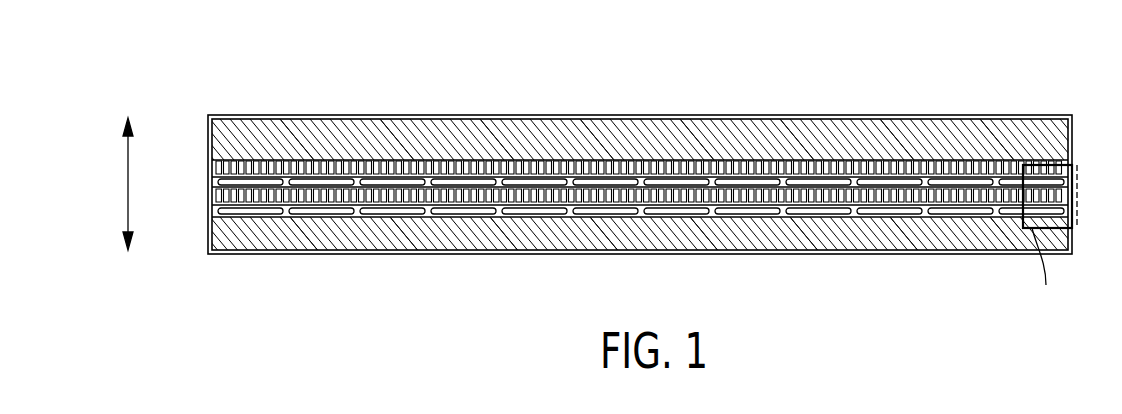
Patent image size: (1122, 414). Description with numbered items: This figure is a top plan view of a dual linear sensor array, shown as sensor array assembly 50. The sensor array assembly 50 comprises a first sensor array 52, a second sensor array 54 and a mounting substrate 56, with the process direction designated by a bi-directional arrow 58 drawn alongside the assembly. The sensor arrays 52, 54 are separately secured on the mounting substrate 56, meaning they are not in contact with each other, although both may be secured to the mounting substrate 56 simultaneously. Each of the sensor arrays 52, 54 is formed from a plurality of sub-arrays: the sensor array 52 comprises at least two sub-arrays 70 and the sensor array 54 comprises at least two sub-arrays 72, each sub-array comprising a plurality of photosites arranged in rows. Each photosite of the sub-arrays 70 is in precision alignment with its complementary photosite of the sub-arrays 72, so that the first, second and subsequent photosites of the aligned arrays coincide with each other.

The sensor array assembly 50 is at (593, 174).
The sensor array 52 is at (596, 123).
The sensor array 54 is at (589, 258).
The mounting substrate 56 is at (927, 137).
The bi-directional arrow 58 is at (128, 191).
The sub-arrays 70 is at (392, 183).
The sub-arrays 72 is at (392, 213).